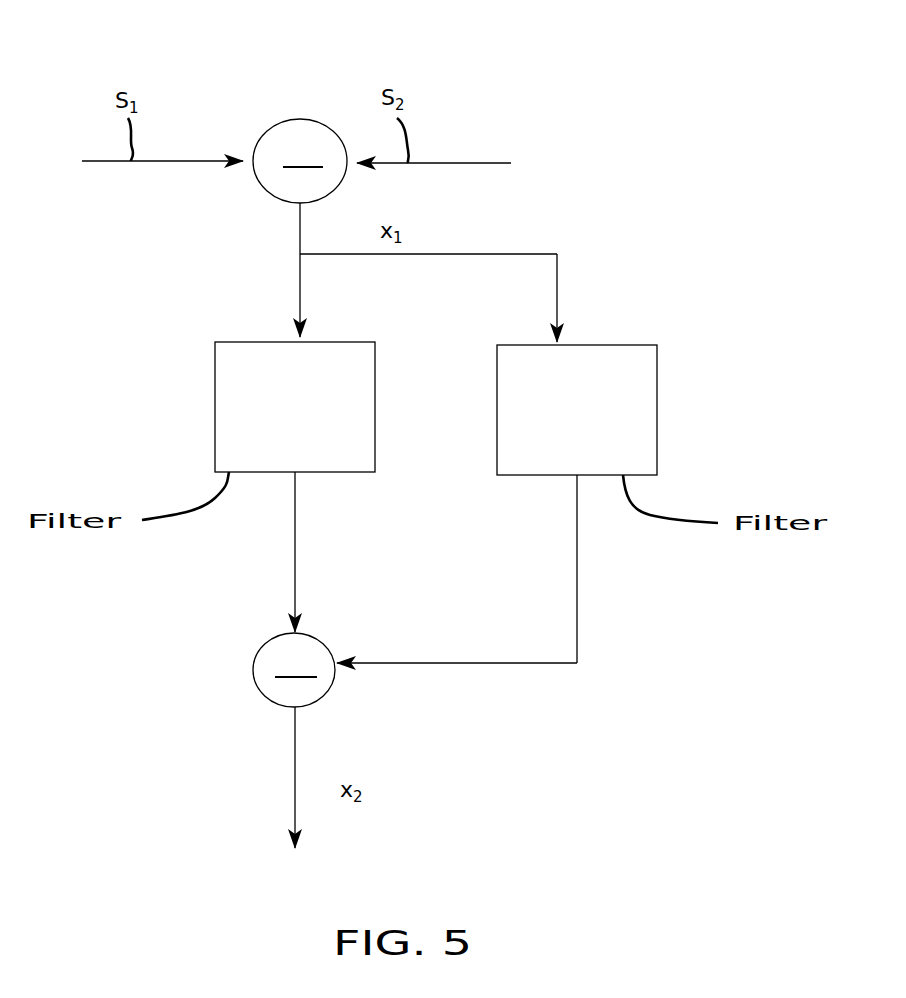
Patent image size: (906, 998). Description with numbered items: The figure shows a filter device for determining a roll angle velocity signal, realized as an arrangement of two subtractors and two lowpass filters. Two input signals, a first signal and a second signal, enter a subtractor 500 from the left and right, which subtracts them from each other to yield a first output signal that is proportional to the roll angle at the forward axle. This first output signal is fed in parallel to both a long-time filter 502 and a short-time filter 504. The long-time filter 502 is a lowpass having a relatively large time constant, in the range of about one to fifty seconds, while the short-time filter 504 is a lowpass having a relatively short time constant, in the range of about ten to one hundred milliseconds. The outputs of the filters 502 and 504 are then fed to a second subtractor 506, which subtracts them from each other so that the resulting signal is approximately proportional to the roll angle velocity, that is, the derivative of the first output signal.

The subtractor 500 is at (313, 119).
The long-time filter 502 is at (244, 407).
The short-time filter 504 is at (657, 418).
The subtractor 506 is at (322, 695).